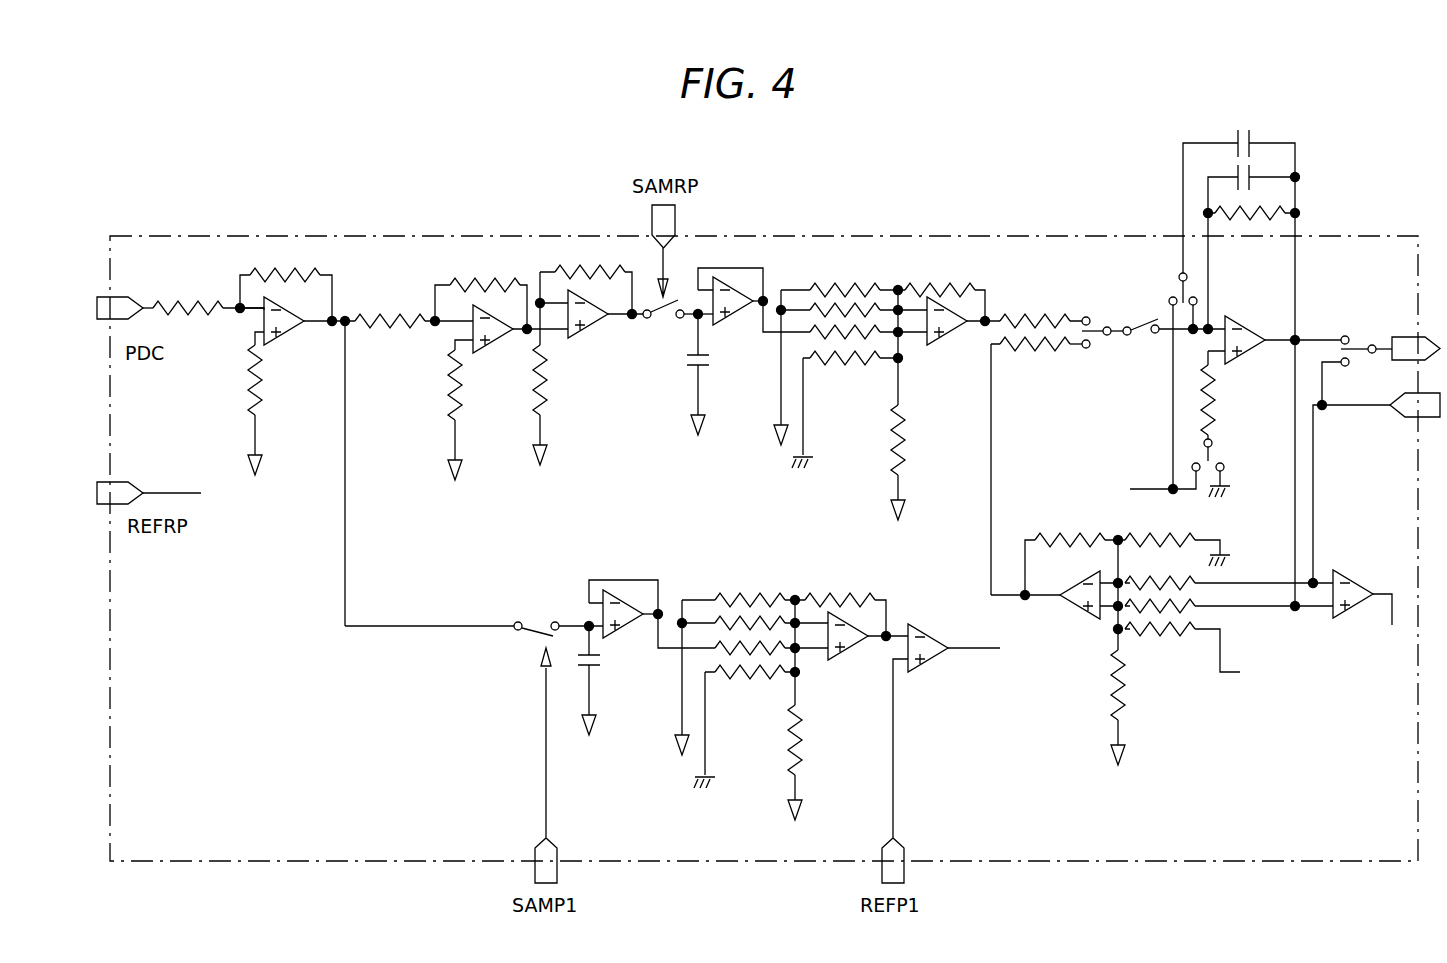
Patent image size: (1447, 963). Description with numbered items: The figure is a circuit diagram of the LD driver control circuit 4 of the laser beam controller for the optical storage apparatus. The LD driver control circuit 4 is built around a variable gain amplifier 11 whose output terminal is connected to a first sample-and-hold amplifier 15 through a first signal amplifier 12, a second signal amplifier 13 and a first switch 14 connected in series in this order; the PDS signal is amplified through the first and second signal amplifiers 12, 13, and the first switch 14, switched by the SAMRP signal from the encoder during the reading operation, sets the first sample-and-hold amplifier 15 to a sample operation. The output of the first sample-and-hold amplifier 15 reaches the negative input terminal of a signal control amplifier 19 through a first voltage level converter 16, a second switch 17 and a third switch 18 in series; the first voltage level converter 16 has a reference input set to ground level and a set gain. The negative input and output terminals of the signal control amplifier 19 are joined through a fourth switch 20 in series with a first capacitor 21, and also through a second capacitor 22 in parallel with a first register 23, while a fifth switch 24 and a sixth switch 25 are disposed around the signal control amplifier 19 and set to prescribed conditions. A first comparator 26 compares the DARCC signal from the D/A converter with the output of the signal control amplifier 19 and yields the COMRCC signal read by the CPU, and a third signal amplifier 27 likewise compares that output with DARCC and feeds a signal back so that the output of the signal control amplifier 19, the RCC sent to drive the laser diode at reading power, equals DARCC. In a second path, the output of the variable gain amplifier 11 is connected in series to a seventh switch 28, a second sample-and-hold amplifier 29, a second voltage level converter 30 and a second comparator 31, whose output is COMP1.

The LD driver control circuit 4 is at (937, 235).
The variable gain amplifier 11 is at (283, 342).
The first signal amplifier 12 is at (488, 352).
The second signal amplifier 13 is at (588, 340).
The first switch 14 is at (666, 330).
The first sample-and-hold amplifier 15 is at (736, 322).
The first voltage level converter 16 is at (942, 340).
The second switch 17 is at (1100, 340).
The third switch 18 is at (1145, 335).
The signal control amplifier 19 is at (1243, 362).
The fourth switch 20 is at (1180, 290).
The first capacitor 21 is at (1235, 140).
The second capacitor 22 is at (1250, 170).
The first register 23 is at (1245, 220).
The fifth switch 24 is at (1350, 335).
The sixth switch 25 is at (1213, 457).
The first comparator 26 is at (1358, 572).
The third signal amplifier 27 is at (1090, 622).
The seventh switch 28 is at (551, 622).
The second sample-and-hold amplifier 29 is at (625, 640).
The second voltage level converter 30 is at (850, 660).
The second comparator 31 is at (930, 665).